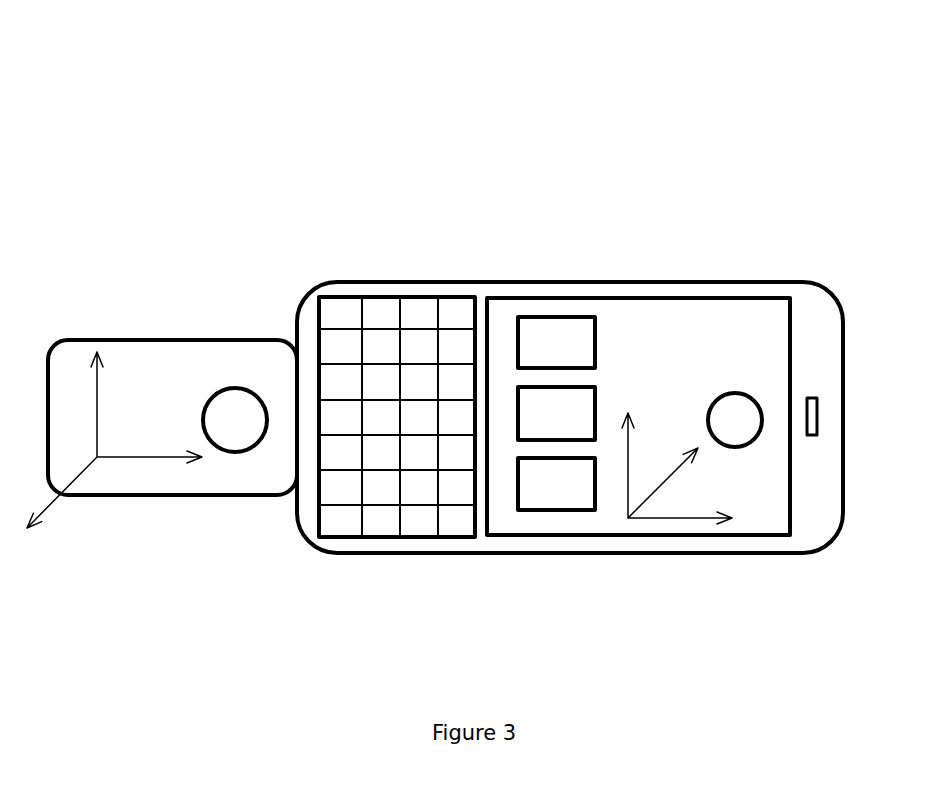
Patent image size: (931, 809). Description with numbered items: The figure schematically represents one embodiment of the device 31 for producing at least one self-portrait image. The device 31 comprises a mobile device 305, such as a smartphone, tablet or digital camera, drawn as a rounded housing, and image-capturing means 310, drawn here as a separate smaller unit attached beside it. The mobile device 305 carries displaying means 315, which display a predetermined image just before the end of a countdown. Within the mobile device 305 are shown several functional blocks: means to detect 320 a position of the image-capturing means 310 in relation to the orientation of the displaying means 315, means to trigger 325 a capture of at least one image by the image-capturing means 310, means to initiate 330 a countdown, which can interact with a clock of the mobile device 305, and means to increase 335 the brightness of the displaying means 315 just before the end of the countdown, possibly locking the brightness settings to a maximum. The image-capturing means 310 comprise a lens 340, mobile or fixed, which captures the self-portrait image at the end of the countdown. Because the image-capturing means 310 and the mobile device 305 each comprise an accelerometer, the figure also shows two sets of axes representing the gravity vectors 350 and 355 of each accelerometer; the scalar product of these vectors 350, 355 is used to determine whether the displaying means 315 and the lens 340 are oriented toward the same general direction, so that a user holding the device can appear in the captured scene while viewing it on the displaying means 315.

The device for producing at least one self-portrait image 31 is at (264, 91).
The mobile device 305 is at (675, 293).
The image-capturing means 310 is at (155, 363).
The displaying means 315 is at (745, 317).
The means to detect a position 320 is at (545, 338).
The means to trigger a capture 325 is at (738, 427).
The means to initiate a countdown 330 is at (562, 422).
The means to increase the brightness 335 is at (568, 482).
The lens 340 is at (225, 400).
The gravity vector of the image-capturing means accelerometer 350 is at (135, 460).
The gravity vector of the mobile device accelerometer 355 is at (655, 520).